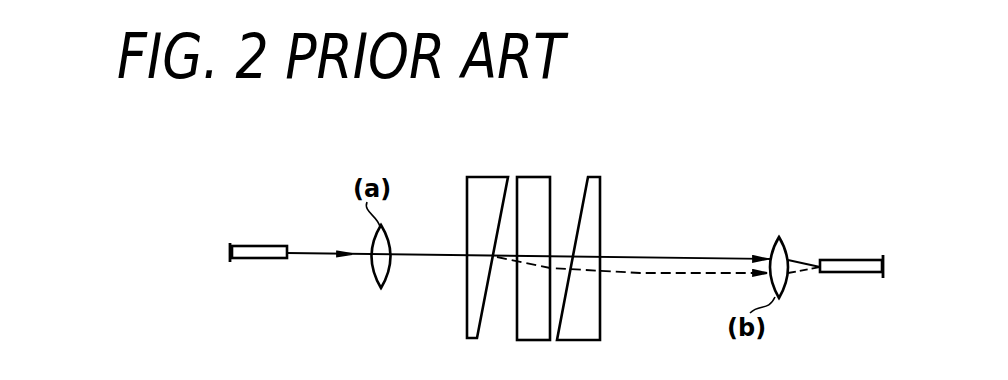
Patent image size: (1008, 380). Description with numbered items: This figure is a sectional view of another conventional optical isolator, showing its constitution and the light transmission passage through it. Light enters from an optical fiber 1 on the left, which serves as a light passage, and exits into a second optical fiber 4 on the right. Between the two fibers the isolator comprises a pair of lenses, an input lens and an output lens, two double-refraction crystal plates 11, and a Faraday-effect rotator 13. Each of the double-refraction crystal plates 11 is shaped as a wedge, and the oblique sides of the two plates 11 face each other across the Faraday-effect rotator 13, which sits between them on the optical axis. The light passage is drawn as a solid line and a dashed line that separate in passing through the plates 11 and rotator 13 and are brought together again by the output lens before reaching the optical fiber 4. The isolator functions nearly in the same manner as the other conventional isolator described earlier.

The optical fiber 1 is at (252, 258).
The optical fiber 4 is at (845, 272).
The double-refraction crystal plate 11 is at (482, 177).
The Faraday-effect rotator 13 is at (538, 176).